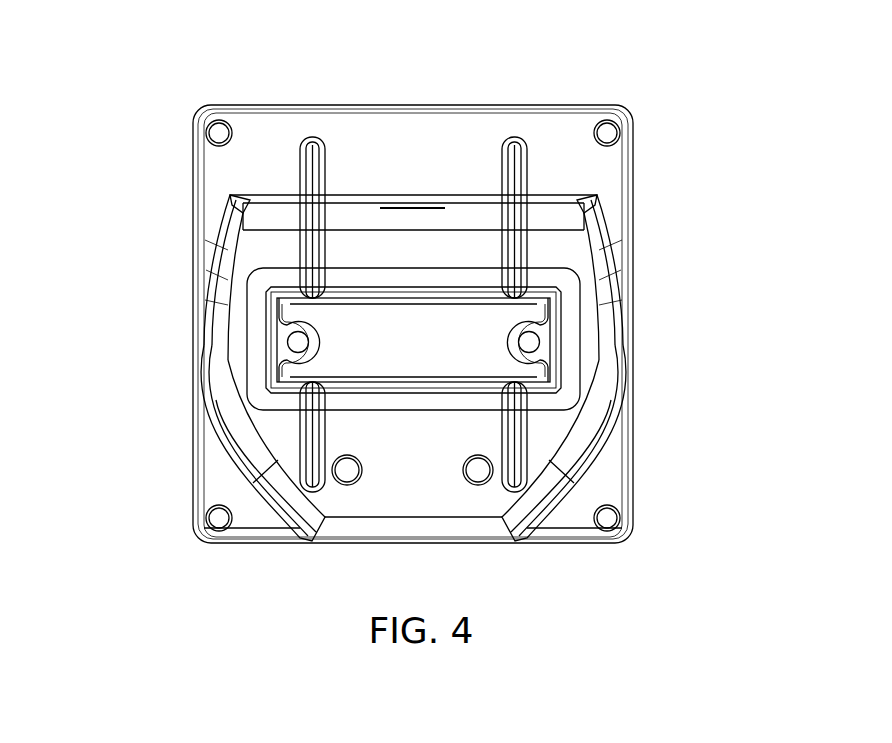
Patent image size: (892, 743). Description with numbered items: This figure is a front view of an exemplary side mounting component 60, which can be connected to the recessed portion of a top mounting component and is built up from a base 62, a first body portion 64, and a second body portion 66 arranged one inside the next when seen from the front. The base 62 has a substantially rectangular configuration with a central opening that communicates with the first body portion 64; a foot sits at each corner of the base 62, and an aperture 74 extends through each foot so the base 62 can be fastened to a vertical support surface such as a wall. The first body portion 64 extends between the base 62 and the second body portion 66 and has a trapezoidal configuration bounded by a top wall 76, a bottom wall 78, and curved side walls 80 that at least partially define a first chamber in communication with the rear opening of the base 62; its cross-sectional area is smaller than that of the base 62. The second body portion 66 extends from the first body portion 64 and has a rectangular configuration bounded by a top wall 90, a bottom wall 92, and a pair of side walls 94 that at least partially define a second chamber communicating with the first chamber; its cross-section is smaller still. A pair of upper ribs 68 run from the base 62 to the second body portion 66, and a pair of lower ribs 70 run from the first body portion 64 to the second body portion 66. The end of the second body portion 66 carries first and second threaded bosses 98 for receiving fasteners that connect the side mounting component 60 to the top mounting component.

The side mounting component 60 is at (491, 289).
The base 62 is at (423, 133).
The first body portion 64 is at (226, 233).
The second body portion 66 is at (412, 412).
The upper ribs 68 is at (518, 170).
The lower ribs 70 is at (515, 475).
The aperture 74 is at (606, 518).
The top wall 76 is at (481, 203).
The bottom wall 78 is at (333, 543).
The curved side walls 80 is at (240, 410).
The top wall 90 is at (545, 290).
The bottom wall 92 is at (434, 392).
The side walls 94 is at (421, 346).
The threaded bosses 98 is at (285, 330).